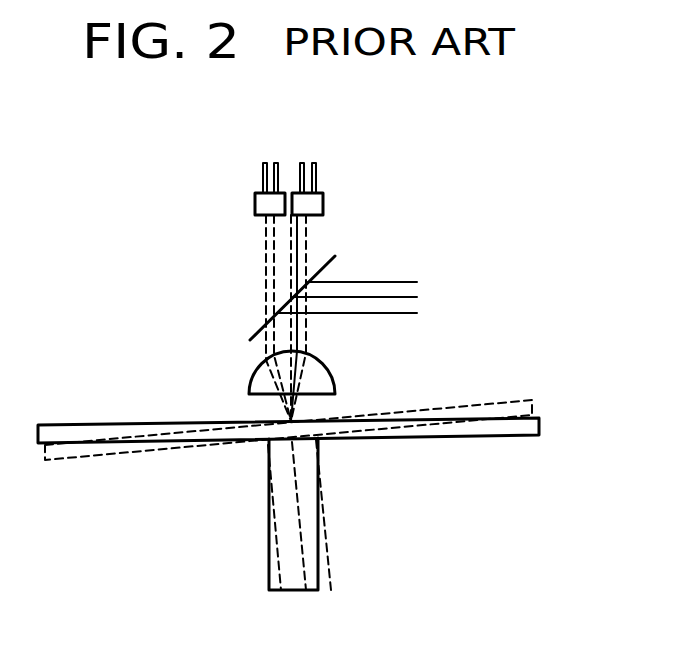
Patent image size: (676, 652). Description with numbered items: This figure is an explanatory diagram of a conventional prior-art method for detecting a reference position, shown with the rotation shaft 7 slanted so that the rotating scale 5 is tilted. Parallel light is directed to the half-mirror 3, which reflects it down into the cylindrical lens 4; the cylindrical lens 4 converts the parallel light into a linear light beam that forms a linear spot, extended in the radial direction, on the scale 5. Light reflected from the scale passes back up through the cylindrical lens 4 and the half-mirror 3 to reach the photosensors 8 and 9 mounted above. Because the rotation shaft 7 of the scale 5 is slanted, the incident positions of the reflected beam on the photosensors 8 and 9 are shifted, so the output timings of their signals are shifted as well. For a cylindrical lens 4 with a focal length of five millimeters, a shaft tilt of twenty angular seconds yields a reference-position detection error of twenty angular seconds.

The half-mirror 3 is at (262, 330).
The cylindrical lens 4 is at (253, 382).
The rotating scale 5 is at (63, 425).
The rotation shaft 7 is at (268, 535).
The photosensor 8 is at (255, 204).
The photosensor 9 is at (325, 203).